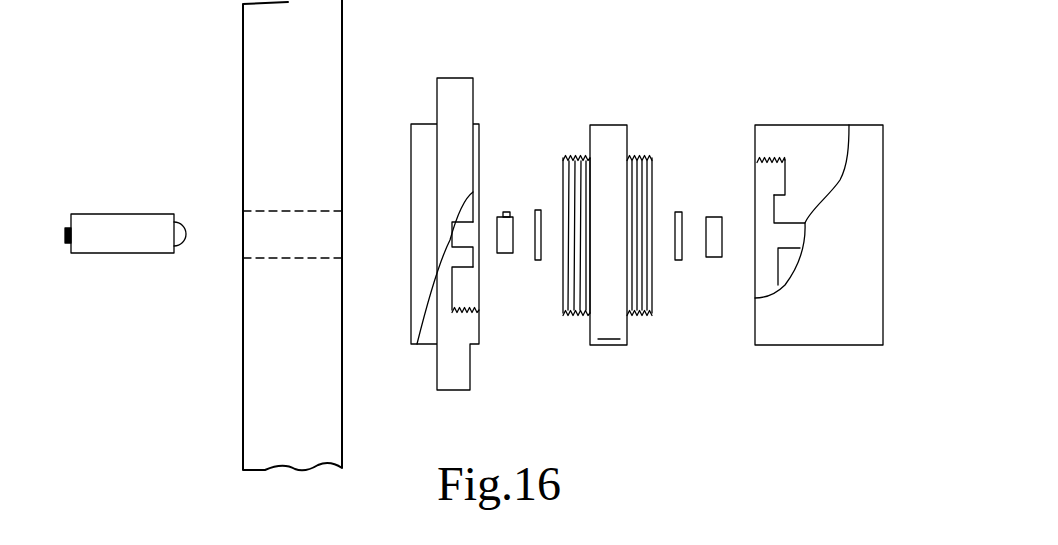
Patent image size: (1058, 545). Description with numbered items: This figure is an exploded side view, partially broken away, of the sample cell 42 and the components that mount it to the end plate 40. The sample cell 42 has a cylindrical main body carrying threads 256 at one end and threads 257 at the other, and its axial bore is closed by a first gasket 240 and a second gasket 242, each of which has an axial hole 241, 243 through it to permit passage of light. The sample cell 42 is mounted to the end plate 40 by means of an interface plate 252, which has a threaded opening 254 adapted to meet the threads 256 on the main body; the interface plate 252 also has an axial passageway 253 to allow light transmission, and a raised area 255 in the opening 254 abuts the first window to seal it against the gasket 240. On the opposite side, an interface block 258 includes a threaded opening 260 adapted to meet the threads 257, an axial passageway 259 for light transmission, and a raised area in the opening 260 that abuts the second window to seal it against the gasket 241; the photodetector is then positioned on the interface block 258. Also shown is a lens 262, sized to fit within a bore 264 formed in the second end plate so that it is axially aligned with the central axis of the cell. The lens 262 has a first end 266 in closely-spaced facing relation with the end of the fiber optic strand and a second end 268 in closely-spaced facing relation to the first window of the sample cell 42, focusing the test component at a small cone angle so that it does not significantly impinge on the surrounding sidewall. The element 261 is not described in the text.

The end plate 40 is at (263, 60).
The sample cell 42 is at (608, 372).
The first gasket 240 is at (534, 222).
The axial hole 241 is at (678, 262).
The second gasket 242 is at (499, 212).
The axial hole 243 is at (717, 215).
The interface plate 252 is at (480, 70).
The axial passageway 253 is at (475, 233).
The threaded opening 254 is at (472, 292).
The raised area 255 is at (473, 258).
The threads 256 is at (573, 157).
The threads 257 is at (641, 157).
The interface block 258 is at (818, 340).
The axial passageway 259 is at (776, 237).
The threaded opening 260 is at (762, 185).
The curved surface 261 is at (772, 213).
The lens 262 is at (143, 220).
The bore 264 is at (244, 226).
The first end 266 is at (65, 233).
The second end 268 is at (182, 240).